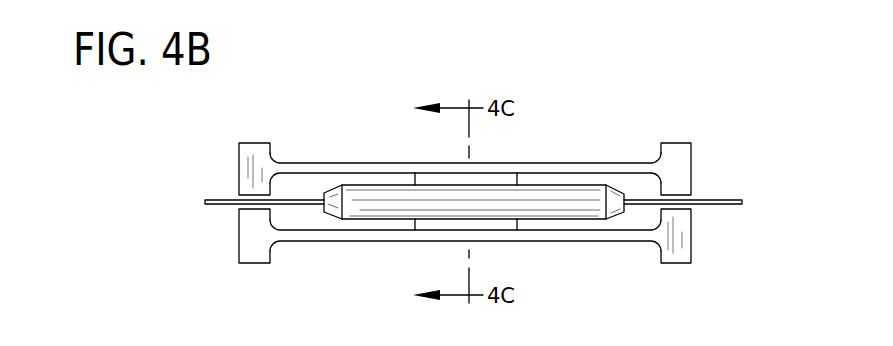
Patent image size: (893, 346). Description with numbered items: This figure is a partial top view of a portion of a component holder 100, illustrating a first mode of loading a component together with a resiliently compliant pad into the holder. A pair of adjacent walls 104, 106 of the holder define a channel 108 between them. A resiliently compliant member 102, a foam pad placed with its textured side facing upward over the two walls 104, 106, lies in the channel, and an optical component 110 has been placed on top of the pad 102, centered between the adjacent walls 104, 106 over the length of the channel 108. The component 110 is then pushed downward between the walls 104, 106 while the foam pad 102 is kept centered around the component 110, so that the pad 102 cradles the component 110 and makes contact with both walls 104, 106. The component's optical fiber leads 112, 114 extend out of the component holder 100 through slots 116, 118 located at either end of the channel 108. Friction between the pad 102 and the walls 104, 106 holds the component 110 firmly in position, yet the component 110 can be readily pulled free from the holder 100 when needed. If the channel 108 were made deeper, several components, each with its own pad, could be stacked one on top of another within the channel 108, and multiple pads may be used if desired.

The component holder 100 is at (580, 100).
The resiliently compliant member 102 is at (504, 226).
The wall 104 is at (306, 162).
The wall 106 is at (310, 243).
The channel 108 is at (640, 188).
The optical component 110 is at (586, 210).
The optical fiber lead 112 is at (217, 199).
The optical fiber lead 114 is at (717, 197).
The slot 116 is at (236, 208).
The slot 118 is at (692, 208).